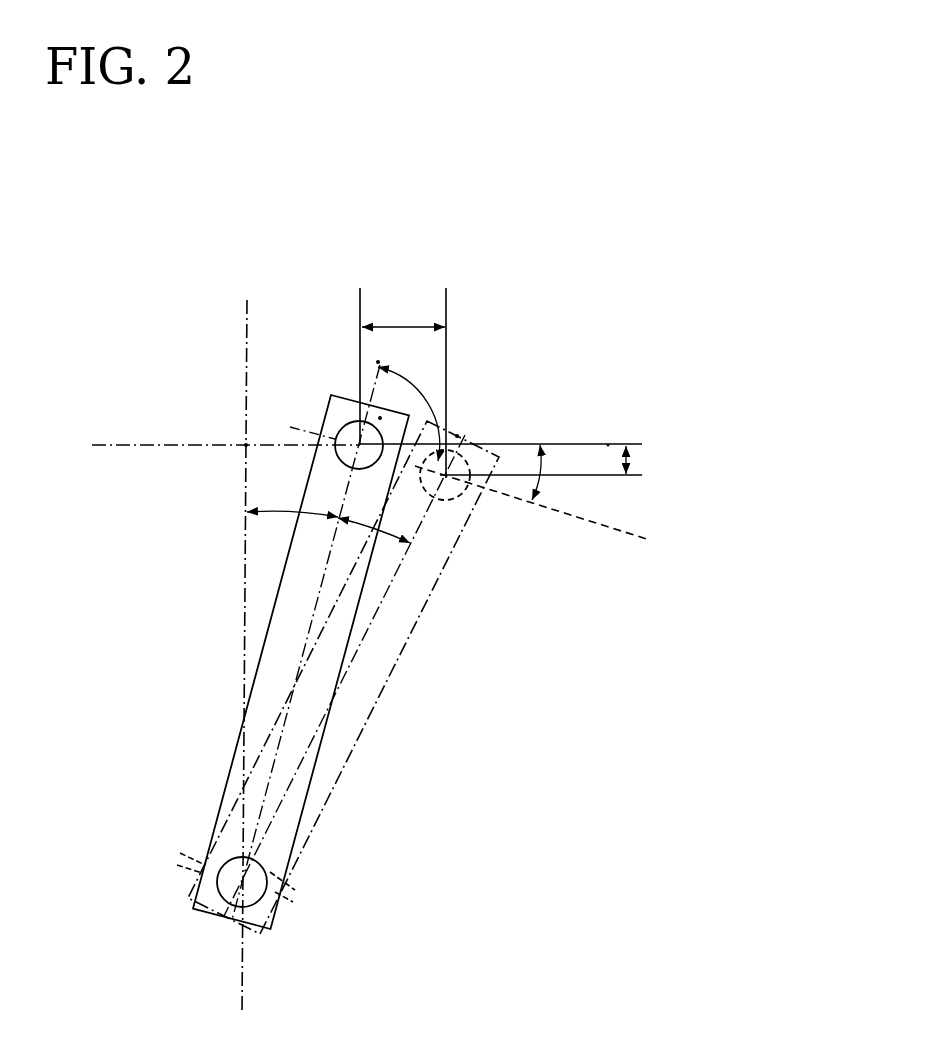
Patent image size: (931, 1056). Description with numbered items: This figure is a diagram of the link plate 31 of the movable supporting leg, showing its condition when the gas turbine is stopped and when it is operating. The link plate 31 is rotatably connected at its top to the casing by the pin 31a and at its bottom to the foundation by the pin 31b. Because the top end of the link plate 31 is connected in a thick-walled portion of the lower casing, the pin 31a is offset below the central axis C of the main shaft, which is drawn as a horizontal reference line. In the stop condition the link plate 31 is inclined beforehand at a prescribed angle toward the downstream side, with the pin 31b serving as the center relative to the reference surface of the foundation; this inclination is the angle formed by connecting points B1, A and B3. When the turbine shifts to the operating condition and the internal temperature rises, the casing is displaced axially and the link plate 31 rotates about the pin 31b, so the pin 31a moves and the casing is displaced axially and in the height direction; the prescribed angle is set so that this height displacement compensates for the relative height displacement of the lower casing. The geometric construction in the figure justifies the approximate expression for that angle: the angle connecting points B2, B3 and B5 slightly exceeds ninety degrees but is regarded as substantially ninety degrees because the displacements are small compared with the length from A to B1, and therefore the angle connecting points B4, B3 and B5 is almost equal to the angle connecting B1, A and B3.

The link plate 31 is at (340, 673).
The pin 31a is at (350, 422).
The pin 31b is at (272, 876).
The point A is at (214, 883).
The point B1 is at (246, 443).
The point B2 is at (378, 360).
The point B3 is at (380, 418).
The point B4 is at (457, 436).
The point B5 is at (455, 487).
The central axis C is at (608, 445).